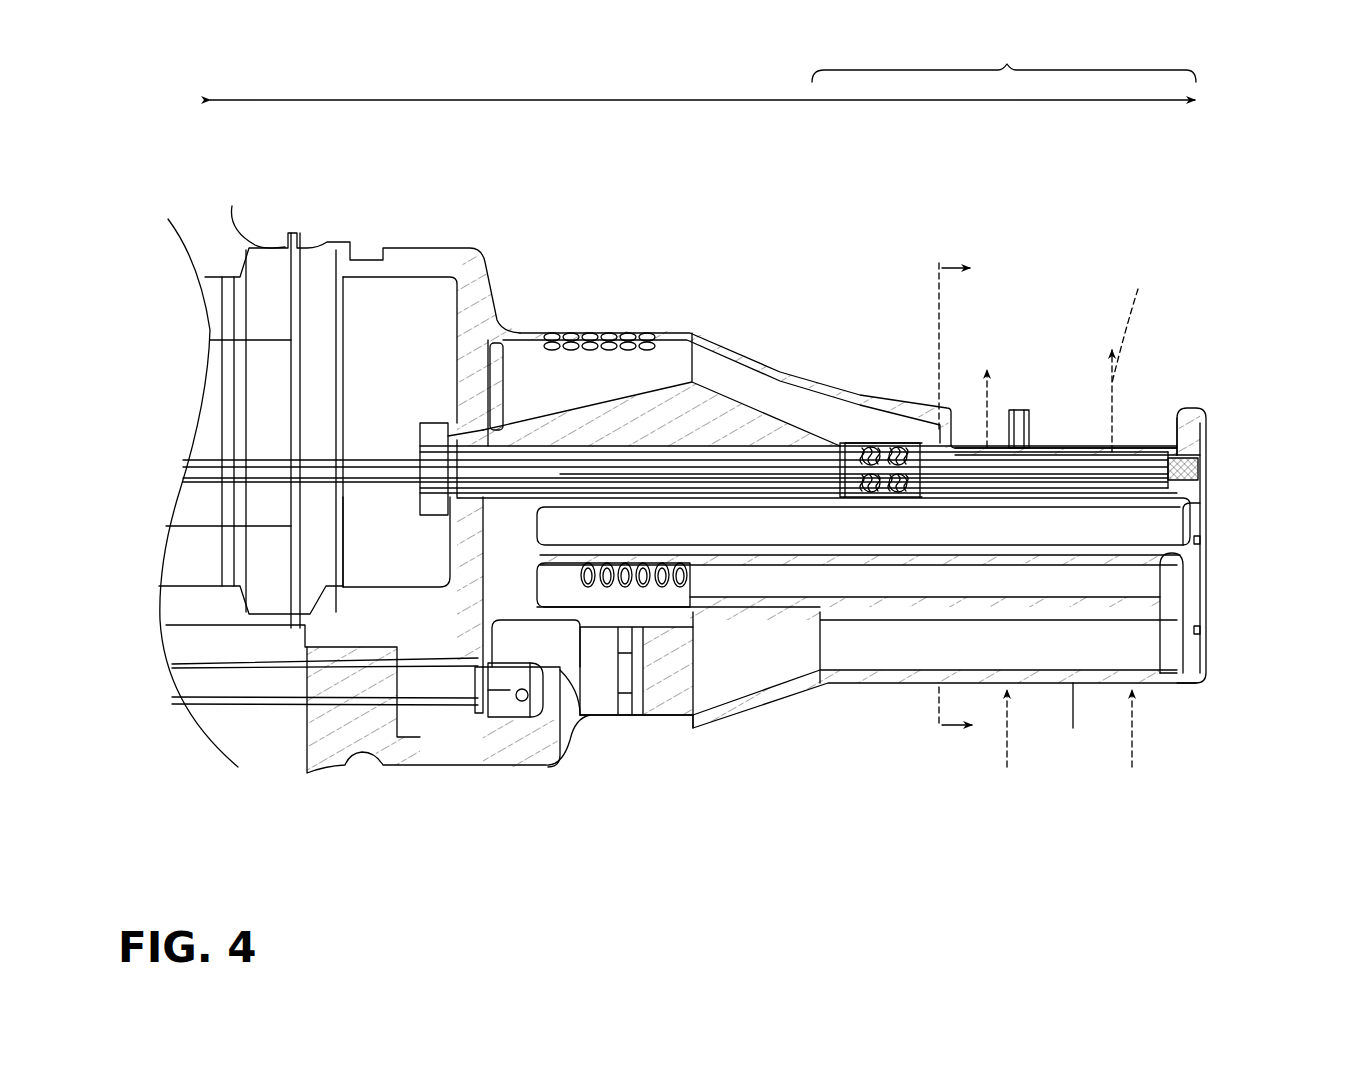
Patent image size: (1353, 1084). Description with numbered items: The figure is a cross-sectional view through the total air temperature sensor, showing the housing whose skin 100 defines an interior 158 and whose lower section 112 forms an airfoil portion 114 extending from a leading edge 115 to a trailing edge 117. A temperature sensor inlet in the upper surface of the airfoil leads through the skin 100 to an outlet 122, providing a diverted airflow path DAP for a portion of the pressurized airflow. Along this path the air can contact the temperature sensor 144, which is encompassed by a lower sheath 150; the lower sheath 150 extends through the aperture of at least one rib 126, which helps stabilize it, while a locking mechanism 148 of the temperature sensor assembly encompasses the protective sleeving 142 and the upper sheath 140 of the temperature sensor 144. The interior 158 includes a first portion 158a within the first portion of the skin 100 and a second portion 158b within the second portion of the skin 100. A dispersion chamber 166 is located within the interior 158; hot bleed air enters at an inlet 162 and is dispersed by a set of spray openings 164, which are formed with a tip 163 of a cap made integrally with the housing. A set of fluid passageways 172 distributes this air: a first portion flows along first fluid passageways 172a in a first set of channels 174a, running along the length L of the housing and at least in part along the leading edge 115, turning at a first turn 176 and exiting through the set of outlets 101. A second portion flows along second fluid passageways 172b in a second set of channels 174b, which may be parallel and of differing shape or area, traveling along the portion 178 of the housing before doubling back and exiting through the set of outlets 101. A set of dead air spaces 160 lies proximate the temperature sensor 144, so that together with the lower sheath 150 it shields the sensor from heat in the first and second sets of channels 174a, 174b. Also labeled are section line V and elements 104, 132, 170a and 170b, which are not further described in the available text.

The skin 100 is at (487, 285).
The set of outlets 101 is at (620, 593).
The bolster hub assembly 104 is at (498, 224).
The lower section 112 is at (1050, 293).
The airfoil portion 114 is at (1150, 718).
The leading edge 115 is at (1073, 719).
The trailing edge 117 is at (1192, 408).
The outlet 122 is at (1160, 412).
The rib 126 is at (1018, 410).
The actuating pin 132 is at (417, 690).
The upper sheath 140 is at (776, 460).
The protective sleeving 142 is at (808, 472).
The temperature sensor 144 is at (1073, 467).
The locking mechanism 148 is at (748, 458).
The lower sheath 150 is at (1140, 450).
The interior 158 is at (670, 368).
The first portion of the interior 158a is at (792, 660).
The second portion of the interior 158b is at (718, 372).
The set of dead air spaces 160 is at (878, 538).
The inlet 162 is at (497, 695).
The tip 163 is at (540, 700).
The set of spray openings 164 is at (559, 693).
The dispersion chamber 166 is at (564, 656).
The lower openings 170a is at (667, 590).
The upper openings 170b is at (647, 330).
The set of fluid passageways 172 is at (1145, 580).
The first fluid passageway 172a is at (1117, 647).
The second fluid passageway 172b is at (533, 368).
The first set of channels 174a is at (1032, 598).
The second set of channels 174b is at (626, 385).
The first turn 176 is at (1172, 627).
The portion of the housing 178 is at (1080, 830).
The length L is at (702, 81).
The diverted airflow path DAP is at (1134, 323).
The section line V is at (929, 258).